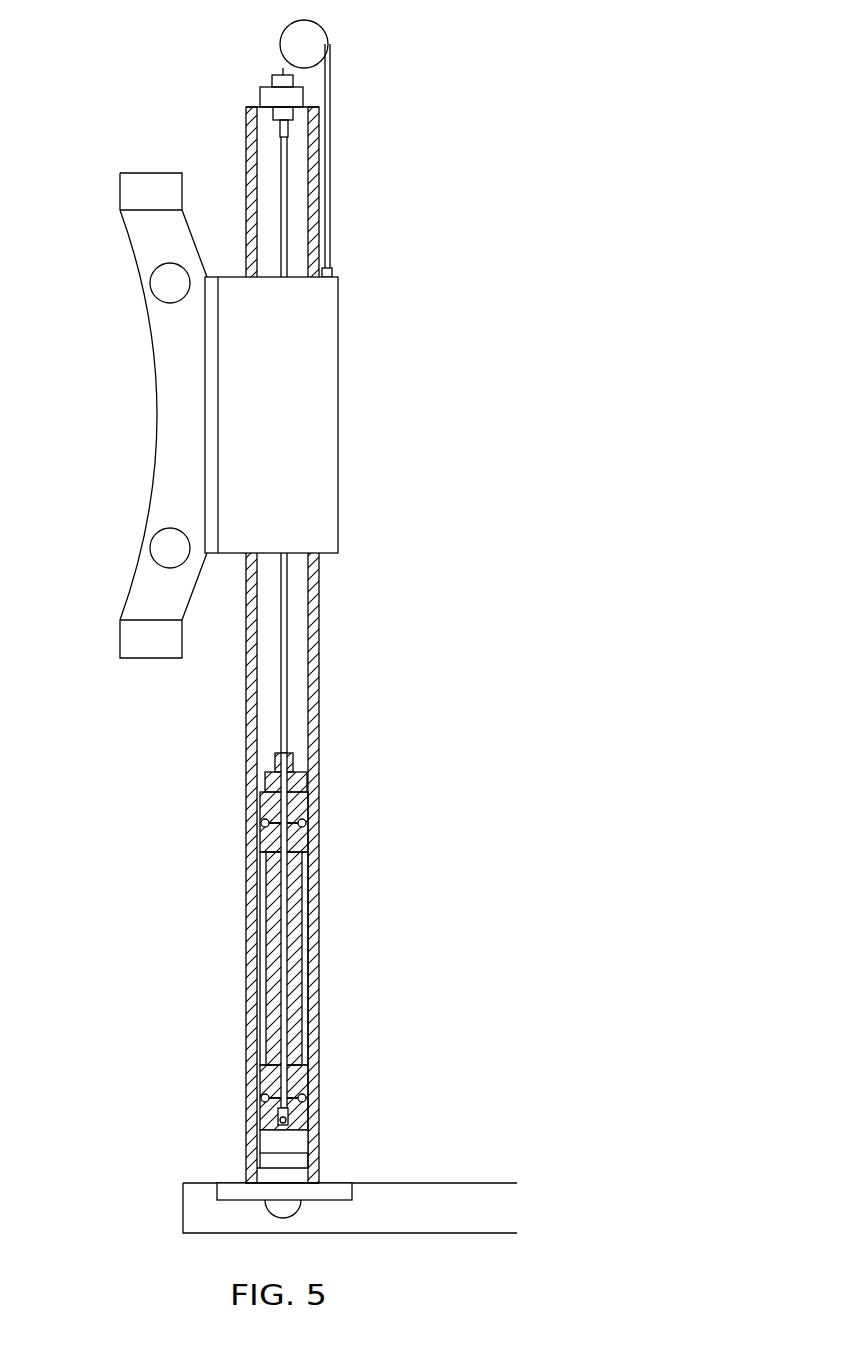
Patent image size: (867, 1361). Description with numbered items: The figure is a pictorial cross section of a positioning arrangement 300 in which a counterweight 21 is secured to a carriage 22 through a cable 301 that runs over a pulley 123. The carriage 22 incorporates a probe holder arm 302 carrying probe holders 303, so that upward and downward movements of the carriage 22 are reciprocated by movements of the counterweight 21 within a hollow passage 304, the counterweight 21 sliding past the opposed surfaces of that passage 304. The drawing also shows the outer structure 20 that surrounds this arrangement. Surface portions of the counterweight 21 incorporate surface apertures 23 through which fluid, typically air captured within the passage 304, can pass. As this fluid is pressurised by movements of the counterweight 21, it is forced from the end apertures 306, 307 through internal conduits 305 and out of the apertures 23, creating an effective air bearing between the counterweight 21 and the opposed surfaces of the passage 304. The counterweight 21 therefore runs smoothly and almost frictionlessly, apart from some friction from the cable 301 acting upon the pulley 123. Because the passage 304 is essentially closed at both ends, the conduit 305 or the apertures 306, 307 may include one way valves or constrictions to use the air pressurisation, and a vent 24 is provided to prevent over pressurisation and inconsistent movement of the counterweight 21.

The arrangement 300 is at (182, 110).
The pulley 123 is at (324, 47).
The cable 301 is at (290, 222).
The carriage 22 is at (340, 313).
The probe holders 303 is at (162, 286).
The probe holder arm 302 is at (166, 405).
The hollow passage 304 is at (306, 645).
The outer cylinder 20 is at (320, 717).
The end aperture 307 is at (290, 788).
The surface apertures 23 is at (263, 823).
The counterweight 21 is at (287, 958).
The internal conduits 305 is at (290, 968).
The end aperture 306 is at (284, 1122).
The vent 24 is at (319, 1135).